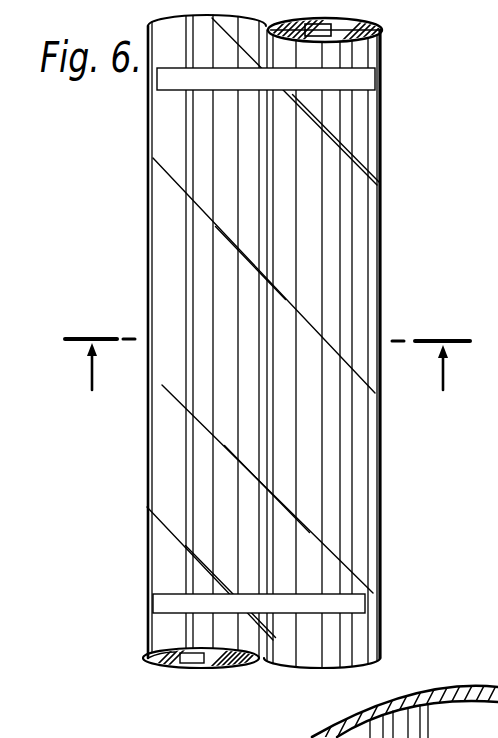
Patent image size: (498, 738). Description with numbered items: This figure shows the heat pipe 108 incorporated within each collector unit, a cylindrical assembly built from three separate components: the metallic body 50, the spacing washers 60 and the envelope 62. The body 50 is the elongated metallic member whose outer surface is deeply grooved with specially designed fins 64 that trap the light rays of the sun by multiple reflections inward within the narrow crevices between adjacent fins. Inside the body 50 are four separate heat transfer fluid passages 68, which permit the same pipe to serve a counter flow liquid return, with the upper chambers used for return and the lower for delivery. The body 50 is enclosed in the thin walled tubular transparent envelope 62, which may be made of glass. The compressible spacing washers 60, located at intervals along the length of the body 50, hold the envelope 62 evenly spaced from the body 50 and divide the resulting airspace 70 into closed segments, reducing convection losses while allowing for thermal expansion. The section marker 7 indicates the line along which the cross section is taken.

The metallic body 50 is at (343, 492).
The spacing washer 60 is at (365, 87).
The envelope 62 is at (150, 660).
The fins 64 is at (195, 668).
The heat transfer fluid passages 68 is at (238, 668).
The airspace 70 is at (170, 665).
The heat pipe 108 is at (386, 256).
The section line 7- 7 is at (267, 381).